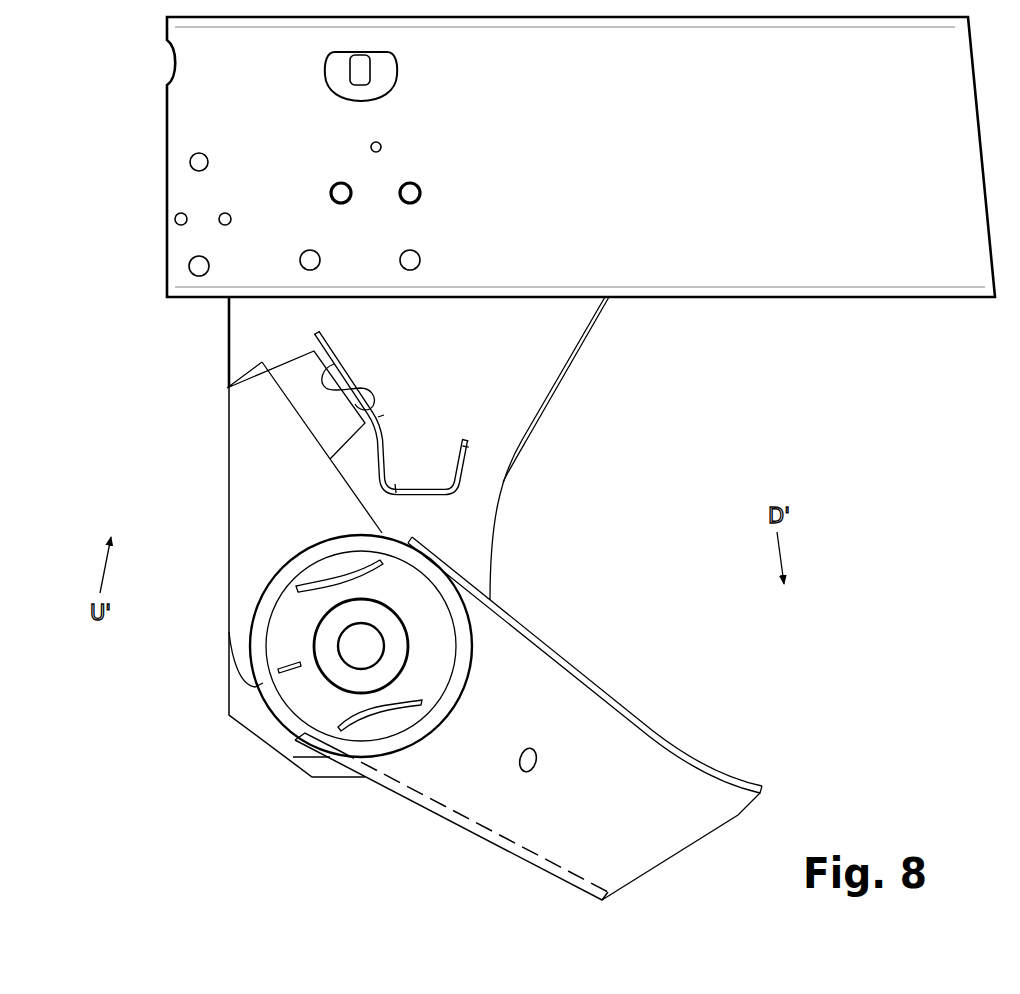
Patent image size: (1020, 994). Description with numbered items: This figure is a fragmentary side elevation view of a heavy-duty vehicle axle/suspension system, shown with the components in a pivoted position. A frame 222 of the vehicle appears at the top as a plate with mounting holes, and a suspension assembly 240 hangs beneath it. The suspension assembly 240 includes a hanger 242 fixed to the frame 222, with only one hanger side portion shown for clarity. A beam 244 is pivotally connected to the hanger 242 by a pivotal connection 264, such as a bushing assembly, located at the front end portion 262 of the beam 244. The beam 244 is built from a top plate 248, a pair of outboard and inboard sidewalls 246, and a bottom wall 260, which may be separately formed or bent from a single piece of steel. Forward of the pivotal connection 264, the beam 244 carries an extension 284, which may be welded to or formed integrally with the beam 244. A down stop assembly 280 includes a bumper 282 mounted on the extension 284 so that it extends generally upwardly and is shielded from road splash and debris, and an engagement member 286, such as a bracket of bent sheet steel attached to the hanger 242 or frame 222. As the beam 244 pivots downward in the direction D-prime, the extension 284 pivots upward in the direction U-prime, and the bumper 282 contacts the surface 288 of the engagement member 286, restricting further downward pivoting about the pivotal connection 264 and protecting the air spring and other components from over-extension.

The frame 222 is at (748, 156).
The suspension assembly 240 is at (586, 588).
The hanger 242 is at (490, 360).
The beam 244 is at (640, 805).
The sidewalls 246 is at (537, 705).
The top plate 248 is at (653, 733).
The bottom wall 260 is at (542, 868).
The front end portion 262 is at (405, 770).
The pivotal connection 264 is at (308, 702).
The down stop assembly 280 is at (190, 363).
The bumper 282 is at (292, 383).
The extension 284 is at (262, 483).
The engagement member 286 is at (313, 342).
The surface 288 is at (360, 388).